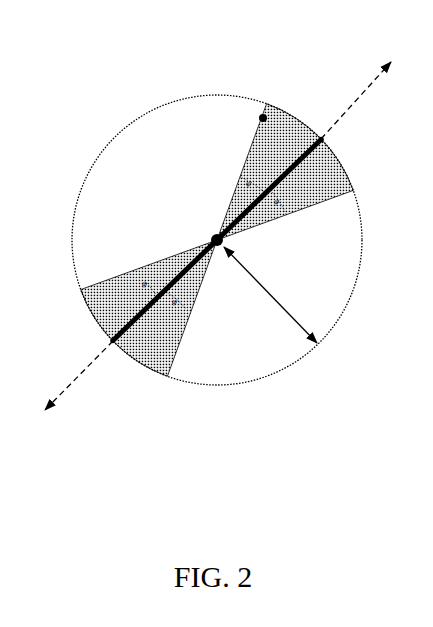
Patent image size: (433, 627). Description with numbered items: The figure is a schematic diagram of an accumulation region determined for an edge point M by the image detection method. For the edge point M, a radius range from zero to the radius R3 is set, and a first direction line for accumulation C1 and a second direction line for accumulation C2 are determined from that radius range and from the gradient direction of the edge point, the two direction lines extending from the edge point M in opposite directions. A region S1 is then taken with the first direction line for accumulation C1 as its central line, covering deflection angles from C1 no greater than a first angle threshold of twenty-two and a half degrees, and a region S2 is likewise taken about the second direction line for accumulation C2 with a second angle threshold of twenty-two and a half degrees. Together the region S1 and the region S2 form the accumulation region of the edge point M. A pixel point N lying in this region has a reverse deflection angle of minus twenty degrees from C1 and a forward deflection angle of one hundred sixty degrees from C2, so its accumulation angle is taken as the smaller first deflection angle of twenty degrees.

The first direction line for accumulation C1 is at (317, 123).
The second direction line for accumulation C2 is at (92, 337).
The region S1 is at (323, 177).
The region S2 is at (163, 352).
The radius R3 is at (270, 295).
The edge point M is at (208, 230).
The pixel point N is at (265, 122).